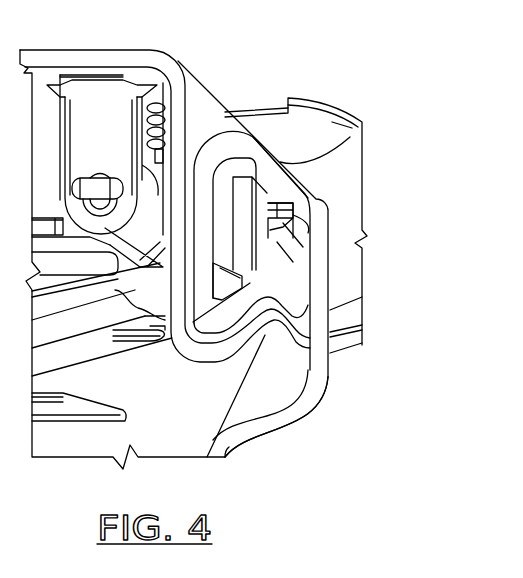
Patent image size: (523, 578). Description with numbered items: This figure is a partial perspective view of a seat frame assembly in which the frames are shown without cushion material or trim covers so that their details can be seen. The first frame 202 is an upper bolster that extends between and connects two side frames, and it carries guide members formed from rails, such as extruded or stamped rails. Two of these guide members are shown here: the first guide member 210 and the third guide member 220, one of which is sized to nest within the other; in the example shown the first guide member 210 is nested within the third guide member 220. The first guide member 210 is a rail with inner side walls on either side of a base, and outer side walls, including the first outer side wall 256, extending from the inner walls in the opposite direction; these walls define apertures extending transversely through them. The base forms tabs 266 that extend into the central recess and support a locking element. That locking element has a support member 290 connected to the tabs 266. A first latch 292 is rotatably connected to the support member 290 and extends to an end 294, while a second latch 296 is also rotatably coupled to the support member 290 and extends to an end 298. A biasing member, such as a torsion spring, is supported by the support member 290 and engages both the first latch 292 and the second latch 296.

The first frame 202 is at (341, 132).
The first guide member 210 is at (200, 102).
The third guide member 220 is at (320, 280).
The first outer side wall 256 is at (242, 195).
The tabs 266 is at (83, 138).
The support member 290 is at (92, 187).
The first latch 292 is at (265, 182).
The end 294 is at (280, 220).
The second latch 296 is at (67, 240).
The end 298 is at (276, 417).